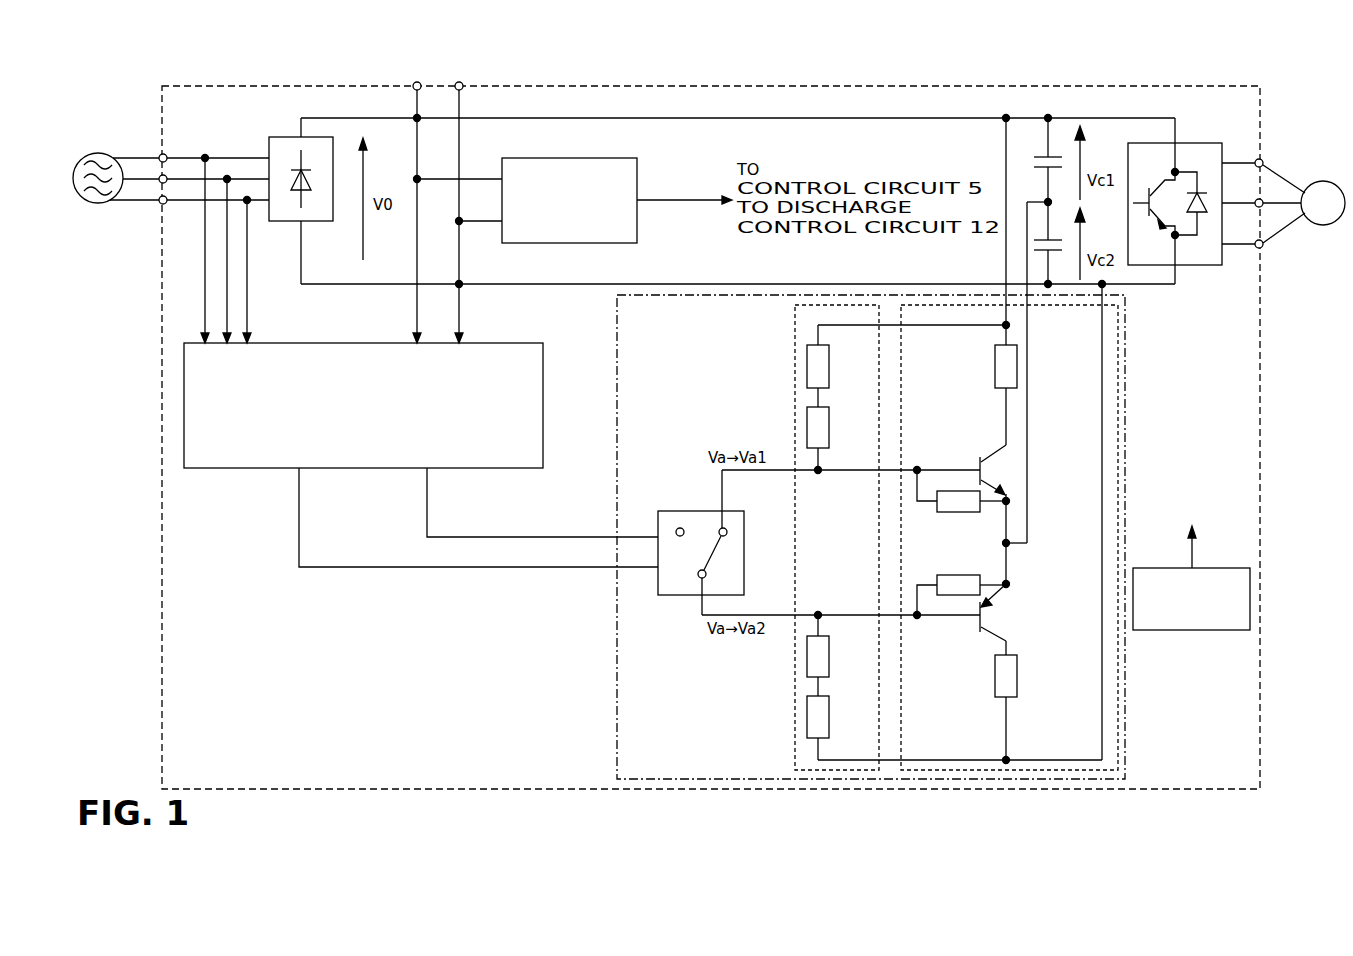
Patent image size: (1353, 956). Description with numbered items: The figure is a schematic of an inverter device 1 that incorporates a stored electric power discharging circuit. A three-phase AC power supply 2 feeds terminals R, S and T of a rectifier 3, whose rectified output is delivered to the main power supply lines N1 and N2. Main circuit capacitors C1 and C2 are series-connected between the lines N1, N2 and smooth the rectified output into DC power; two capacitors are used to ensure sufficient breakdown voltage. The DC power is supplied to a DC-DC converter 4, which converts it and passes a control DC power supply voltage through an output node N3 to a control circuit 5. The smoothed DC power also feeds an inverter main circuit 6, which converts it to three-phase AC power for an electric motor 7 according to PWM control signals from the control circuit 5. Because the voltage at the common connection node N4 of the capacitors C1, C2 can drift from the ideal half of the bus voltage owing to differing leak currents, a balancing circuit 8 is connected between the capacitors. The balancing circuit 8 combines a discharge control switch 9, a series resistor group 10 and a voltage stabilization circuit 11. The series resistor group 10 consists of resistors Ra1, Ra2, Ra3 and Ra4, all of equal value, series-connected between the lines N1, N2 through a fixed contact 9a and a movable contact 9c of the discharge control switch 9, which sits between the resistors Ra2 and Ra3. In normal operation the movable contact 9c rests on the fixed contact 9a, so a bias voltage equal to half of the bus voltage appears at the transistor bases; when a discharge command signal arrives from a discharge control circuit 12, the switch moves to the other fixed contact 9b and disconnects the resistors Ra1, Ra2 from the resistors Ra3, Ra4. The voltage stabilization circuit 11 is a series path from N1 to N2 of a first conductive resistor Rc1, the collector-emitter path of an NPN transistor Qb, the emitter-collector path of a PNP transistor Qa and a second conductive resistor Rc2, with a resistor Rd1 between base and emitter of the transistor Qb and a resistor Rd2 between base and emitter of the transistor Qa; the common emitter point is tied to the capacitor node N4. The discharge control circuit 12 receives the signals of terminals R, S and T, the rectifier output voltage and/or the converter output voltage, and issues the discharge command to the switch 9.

The inverter device 1 is at (868, 86).
The three-phase AC power supply 2 is at (100, 152).
The rectifier 3 is at (275, 134).
The DC-DC converter 4 is at (577, 158).
The control circuit 5 is at (1193, 632).
The inverter main circuit 6 is at (1197, 268).
The electric motor 7 is at (1324, 182).
The balancing circuit 8 is at (1126, 376).
The discharge control switch 9 is at (714, 563).
The fixed contact 9a is at (728, 532).
The fixed contact 9b is at (682, 525).
The movable contact 9c is at (707, 574).
The series resistor group 10 is at (840, 771).
The voltage stabilization circuit 11 is at (950, 771).
The discharge control circuit 12 is at (343, 340).
The main power supply line N1 is at (742, 118).
The main power supply line N2 is at (685, 282).
The output node N3 is at (665, 207).
The common connection node N4 is at (1030, 458).
The main circuit capacitor C1 is at (1040, 160).
The main circuit capacitor C2 is at (1053, 243).
The resistor Ra1 is at (836, 367).
The resistor Ra2 is at (836, 427).
The resistor Ra3 is at (836, 656).
The resistor Ra4 is at (836, 717).
The resistor Rc1 is at (982, 367).
The resistor Rc2 is at (982, 676).
The resistor Rd1 is at (961, 504).
The resistor Rd2 is at (961, 585).
The PNP transistor Qa is at (1005, 612).
The NPN transistor Qb is at (987, 465).